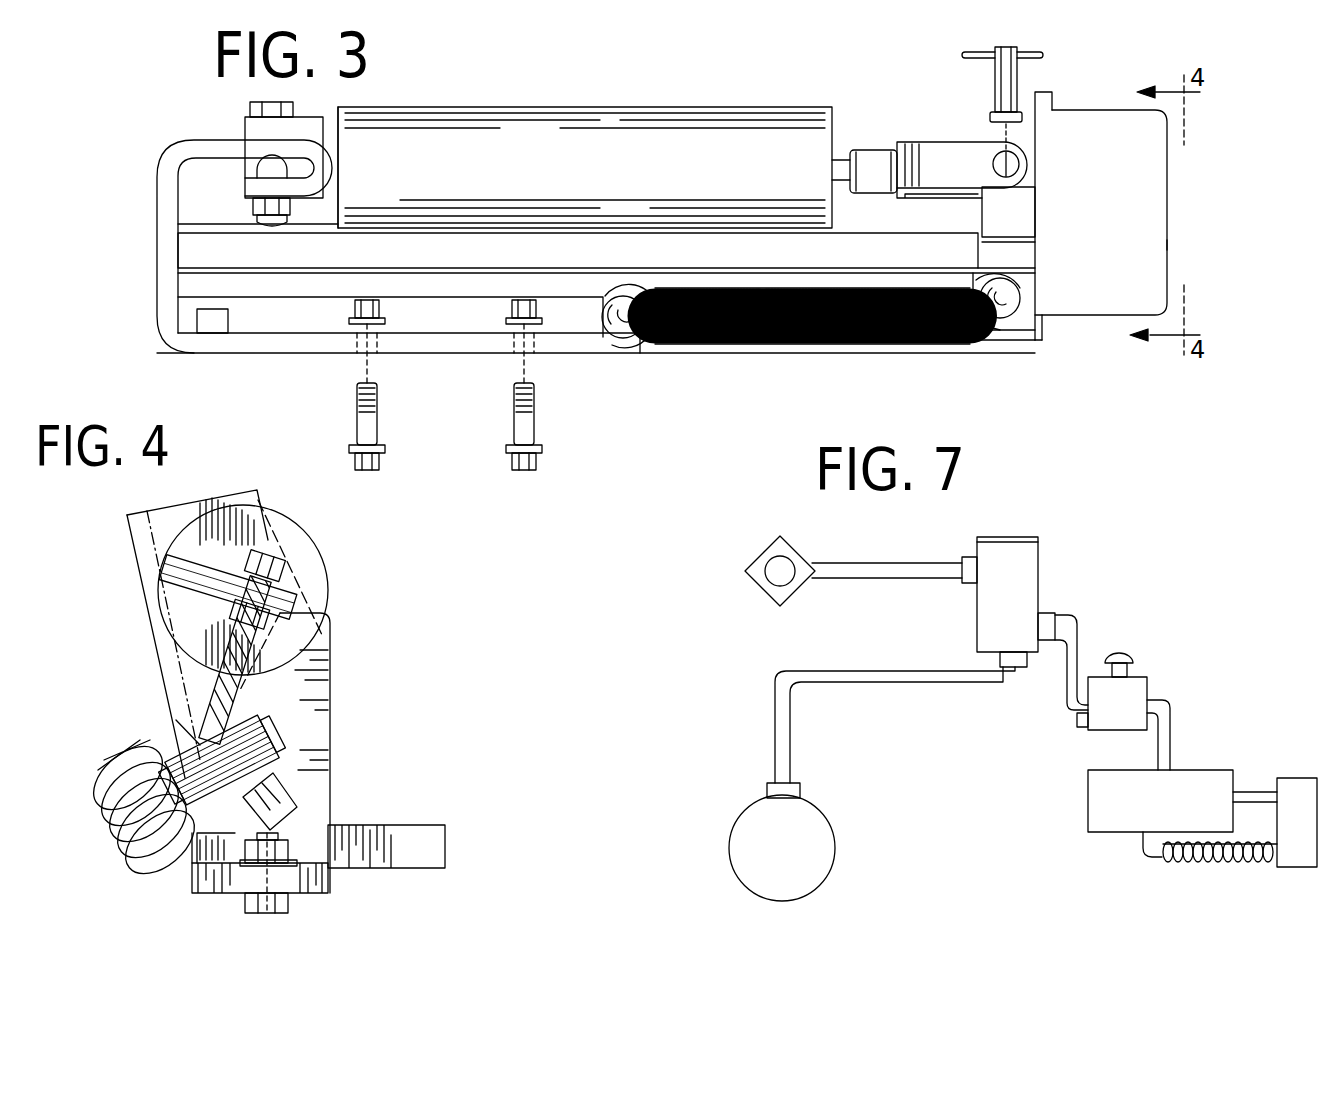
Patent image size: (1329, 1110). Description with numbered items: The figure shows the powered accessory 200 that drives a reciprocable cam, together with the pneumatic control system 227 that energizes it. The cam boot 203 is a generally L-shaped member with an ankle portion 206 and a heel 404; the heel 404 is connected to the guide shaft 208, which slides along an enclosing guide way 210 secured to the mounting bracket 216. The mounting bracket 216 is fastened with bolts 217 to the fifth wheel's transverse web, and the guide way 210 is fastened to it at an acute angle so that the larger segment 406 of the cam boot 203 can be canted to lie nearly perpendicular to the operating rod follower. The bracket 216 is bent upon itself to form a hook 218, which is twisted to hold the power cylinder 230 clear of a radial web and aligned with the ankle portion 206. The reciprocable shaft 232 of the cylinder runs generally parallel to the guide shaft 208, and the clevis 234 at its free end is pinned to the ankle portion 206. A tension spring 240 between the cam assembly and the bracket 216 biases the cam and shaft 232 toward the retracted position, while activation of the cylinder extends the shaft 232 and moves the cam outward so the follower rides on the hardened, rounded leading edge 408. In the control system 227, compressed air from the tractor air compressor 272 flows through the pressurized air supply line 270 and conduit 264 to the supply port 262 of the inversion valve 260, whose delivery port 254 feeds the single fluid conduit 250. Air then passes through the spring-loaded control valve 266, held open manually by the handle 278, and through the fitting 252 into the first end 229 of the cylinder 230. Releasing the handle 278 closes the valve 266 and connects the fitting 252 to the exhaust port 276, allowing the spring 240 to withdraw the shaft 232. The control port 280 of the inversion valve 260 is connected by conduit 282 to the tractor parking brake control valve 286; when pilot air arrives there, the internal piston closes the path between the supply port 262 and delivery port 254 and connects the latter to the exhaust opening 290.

In FIG. 3, the powered accessory 200 is at (600, 103).
In FIG. 3, the cam boot 203 is at (1092, 320).
In FIG. 7, the cam boot 203 is at (1288, 880).
In FIG. 3, the ankle portion 206 is at (980, 218).
In FIG. 4, the ankle portion 206 is at (235, 680).
In FIG. 3, the guide shaft 208 is at (978, 254).
In FIG. 4, the guide shaft 208 is at (183, 758).
In FIG. 4, the guide way 210 is at (278, 757).
In FIG. 3, the mounting bracket 216 is at (258, 338).
In FIG. 4, the mounting bracket 216 is at (202, 878).
In FIG. 3, the bolts 217 is at (515, 430).
In FIG. 3, the hook 218 is at (200, 140).
In FIG. 7, the control system 227 is at (851, 642).
In FIG. 3, the first end 229 is at (350, 104).
In FIG. 7, the first end 229 is at (1088, 796).
In FIG. 3, the power cylinder 230 is at (569, 177).
In FIG. 4, the power cylinder 230 is at (305, 535).
In FIG. 7, the power cylinder 230 is at (1176, 816).
In FIG. 3, the reciprocable shaft 232 is at (847, 157).
In FIG. 7, the reciprocable shaft 232 is at (1245, 790).
In FIG. 3, the clevis 234 is at (930, 142).
In FIG. 3, the tension spring 240 is at (728, 344).
In FIG. 4, the tension spring 240 is at (124, 868).
In FIG. 7, the tension spring 240 is at (1178, 862).
In FIG. 7, the fluid conduit 250 is at (1073, 637).
In FIG. 7, the fitting 252 is at (1165, 766).
In FIG. 7, the delivery port 254 is at (1053, 613).
In FIG. 7, the inversion valve 260 is at (1029, 595).
In FIG. 7, the supply port 262 is at (990, 662).
In FIG. 7, the conduit 264 is at (840, 690).
In FIG. 7, the regulator valve 266 is at (1141, 713).
In FIG. 7, the pressurized air supply line 270 is at (775, 730).
In FIG. 7, the tractor air compressor 272 is at (820, 807).
In FIG. 7, the exhaust port 276 is at (1077, 720).
In FIG. 7, the handle 278 is at (1130, 660).
In FIG. 7, the control port 280 is at (960, 576).
In FIG. 7, the conduit 282 is at (840, 563).
In FIG. 7, the tractor parking brake control valve 286 is at (758, 560).
In FIG. 7, the exhaust opening 290 is at (1038, 540).
In FIG. 3, the heel 404 is at (1046, 94).
In FIG. 4, the heel 404 is at (212, 492).
In FIG. 3, the larger segment 406 is at (1075, 110).
In FIG. 4, the larger segment 406 is at (125, 523).
In FIG. 7, the larger segment 406 is at (1322, 792).
In FIG. 3, the leading edge 408 is at (1168, 248).